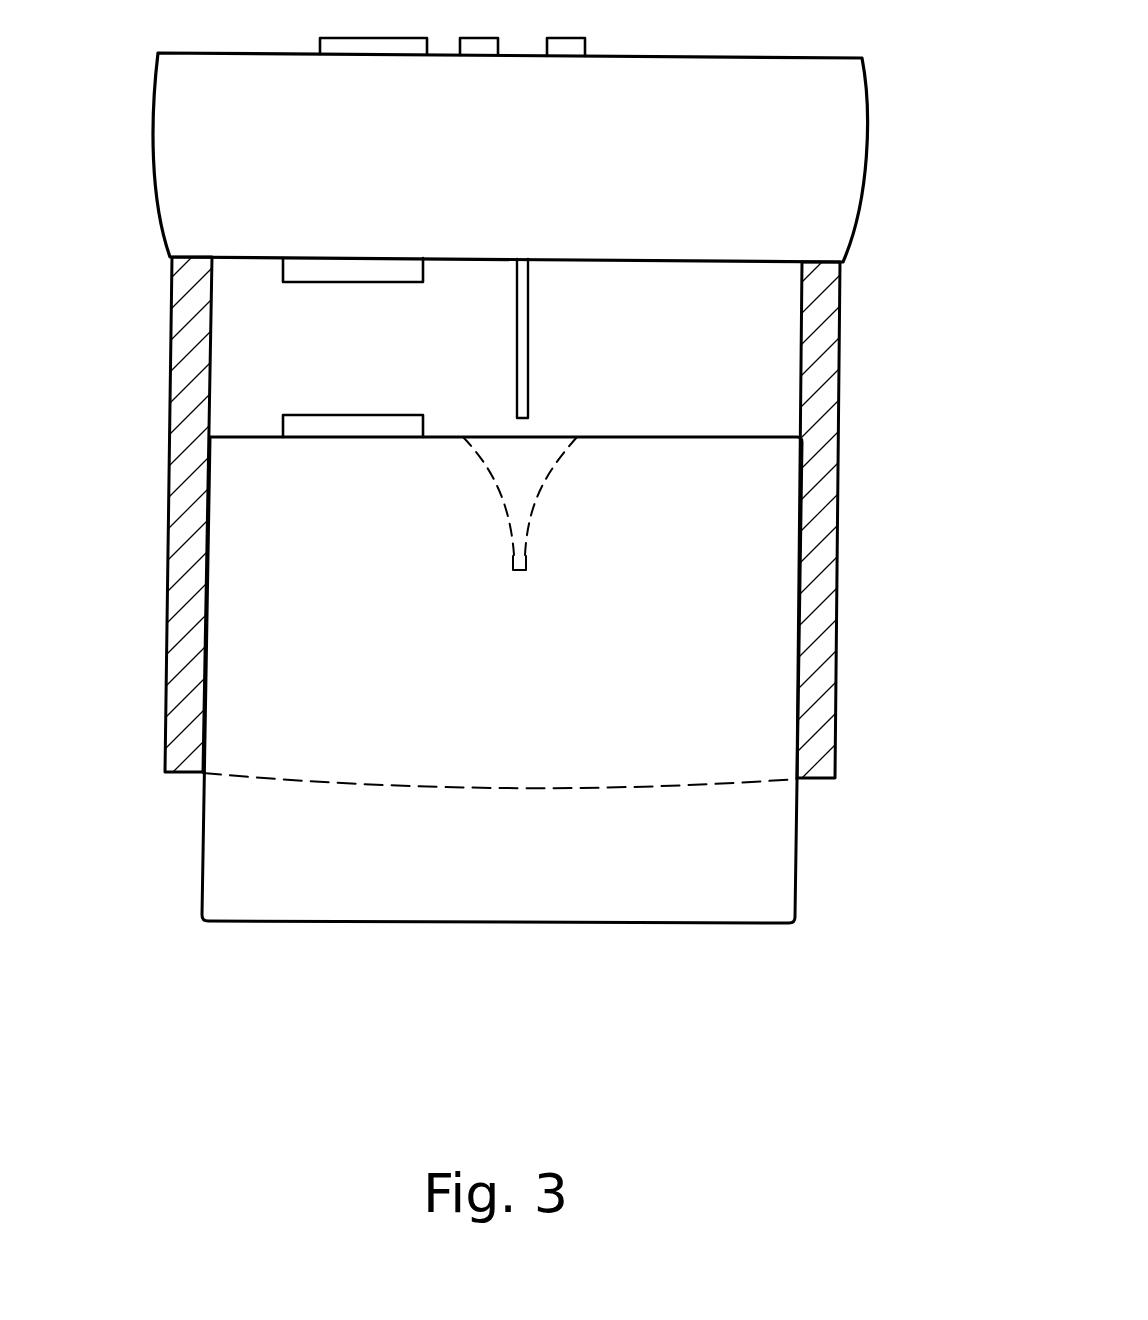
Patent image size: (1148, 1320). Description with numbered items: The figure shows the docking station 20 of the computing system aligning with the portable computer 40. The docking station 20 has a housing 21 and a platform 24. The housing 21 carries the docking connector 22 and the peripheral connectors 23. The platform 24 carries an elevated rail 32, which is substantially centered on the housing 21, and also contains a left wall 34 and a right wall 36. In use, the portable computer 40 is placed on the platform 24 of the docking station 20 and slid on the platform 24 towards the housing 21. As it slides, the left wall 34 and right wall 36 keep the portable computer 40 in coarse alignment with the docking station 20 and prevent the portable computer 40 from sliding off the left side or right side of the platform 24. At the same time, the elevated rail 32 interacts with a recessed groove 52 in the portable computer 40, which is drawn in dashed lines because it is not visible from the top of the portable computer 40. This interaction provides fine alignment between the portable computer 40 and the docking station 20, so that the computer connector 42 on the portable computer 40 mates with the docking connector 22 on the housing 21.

The docking station 20 is at (862, 60).
The housing 21 is at (287, 140).
The docking connector 22 is at (367, 268).
The peripheral connectors 23 is at (585, 43).
The platform 24 is at (691, 354).
The elevated rail 32 is at (528, 370).
The left wall 34 is at (190, 520).
The right wall 36 is at (825, 465).
The portable computer 40 is at (772, 858).
The computer connector 42 is at (363, 425).
The recessed groove 52 is at (490, 470).